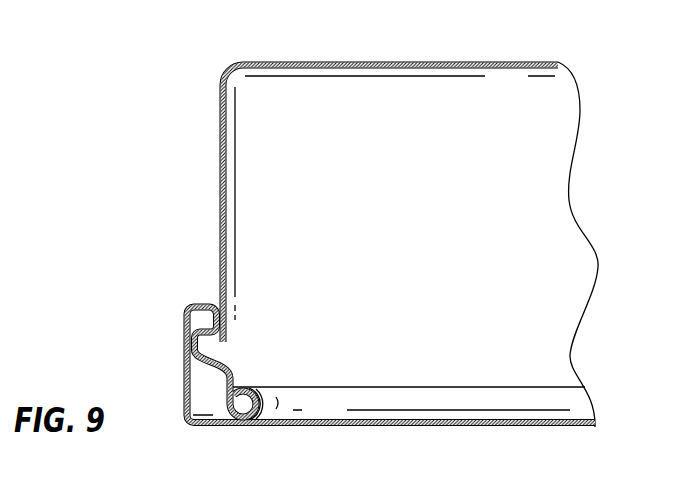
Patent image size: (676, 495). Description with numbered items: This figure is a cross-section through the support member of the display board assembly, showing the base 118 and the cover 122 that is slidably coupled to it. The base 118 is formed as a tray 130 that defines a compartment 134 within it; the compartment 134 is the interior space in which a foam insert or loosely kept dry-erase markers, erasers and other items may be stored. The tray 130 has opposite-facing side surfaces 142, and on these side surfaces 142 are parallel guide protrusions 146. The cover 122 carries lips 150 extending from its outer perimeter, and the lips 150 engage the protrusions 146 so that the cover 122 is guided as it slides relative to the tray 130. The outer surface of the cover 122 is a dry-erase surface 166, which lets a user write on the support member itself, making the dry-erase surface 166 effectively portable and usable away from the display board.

The base 118 is at (362, 62).
The tray 130 is at (219, 140).
The side surfaces 142 is at (219, 210).
The lips 150 is at (186, 303).
The guide protrusions 146 is at (184, 378).
The cover 122 is at (205, 428).
The dry-erase surface 166 is at (332, 428).
The compartment 134 is at (518, 157).